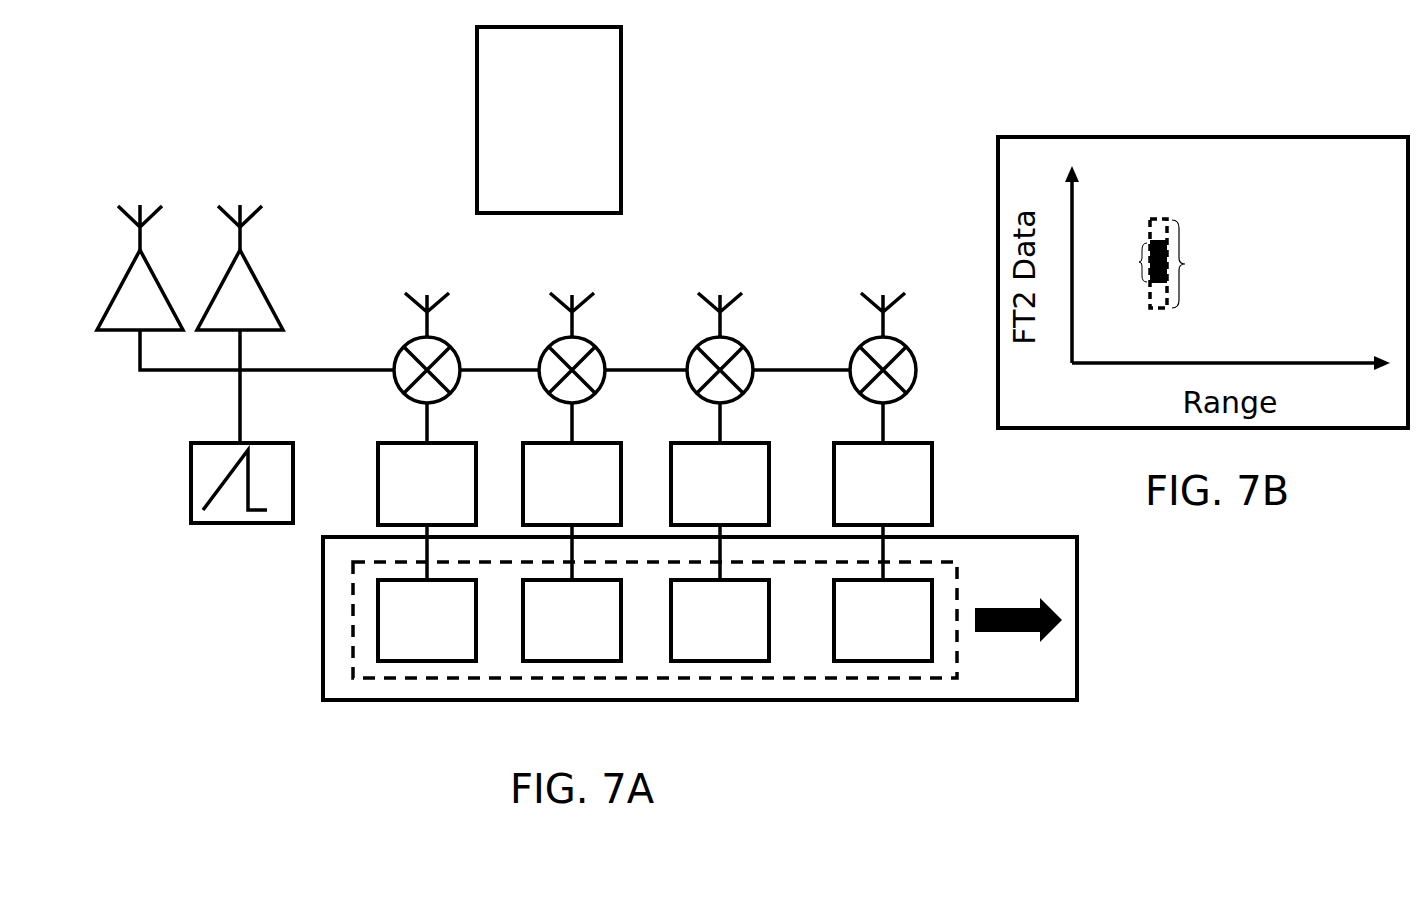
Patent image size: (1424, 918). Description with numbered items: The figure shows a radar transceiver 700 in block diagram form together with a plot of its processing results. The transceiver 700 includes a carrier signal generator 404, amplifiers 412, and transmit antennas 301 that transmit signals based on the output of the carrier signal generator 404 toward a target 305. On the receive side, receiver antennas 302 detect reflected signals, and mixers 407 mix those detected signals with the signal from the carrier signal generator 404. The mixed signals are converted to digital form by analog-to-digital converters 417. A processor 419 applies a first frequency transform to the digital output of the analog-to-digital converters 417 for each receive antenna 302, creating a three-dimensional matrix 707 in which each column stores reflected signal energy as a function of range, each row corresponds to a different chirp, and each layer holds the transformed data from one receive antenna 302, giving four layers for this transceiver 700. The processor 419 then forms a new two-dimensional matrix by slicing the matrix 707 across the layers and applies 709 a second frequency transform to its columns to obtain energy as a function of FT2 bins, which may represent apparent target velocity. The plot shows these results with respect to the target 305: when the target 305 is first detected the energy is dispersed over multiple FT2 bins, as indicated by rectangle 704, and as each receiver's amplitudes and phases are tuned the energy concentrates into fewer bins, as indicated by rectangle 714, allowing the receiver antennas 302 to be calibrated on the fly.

In FIG. 7A, the target 305 is at (477, 118).
In FIG. 7B, the target 305 is at (1150, 240).
In FIG. 7A, the radar transceiver 700 is at (820, 186).
In FIG. 7A, the transmit antennas 301 is at (138, 240).
In FIG. 7A, the amplifiers 412 is at (125, 302).
In FIG. 7A, the carrier signal generator 404 is at (240, 525).
In FIG. 7A, the receiver antennas 302 is at (442, 300).
In FIG. 7A, the mixers 407 is at (400, 360).
In FIG. 7A, the analog-to-digital converters 417 is at (448, 443).
In FIG. 7A, the processor 419 is at (657, 655).
In FIG. 7A, the three-dimensional matrix 707 is at (351, 622).
In FIG. 7A, the second frequency transform application 709 is at (1002, 634).
In FIG. 7B, the rectangle indicating concentrated energy distribution 714 is at (1139, 262).
In FIG. 7B, the rectangle indicating dispersed energy distribution 704 is at (1186, 264).